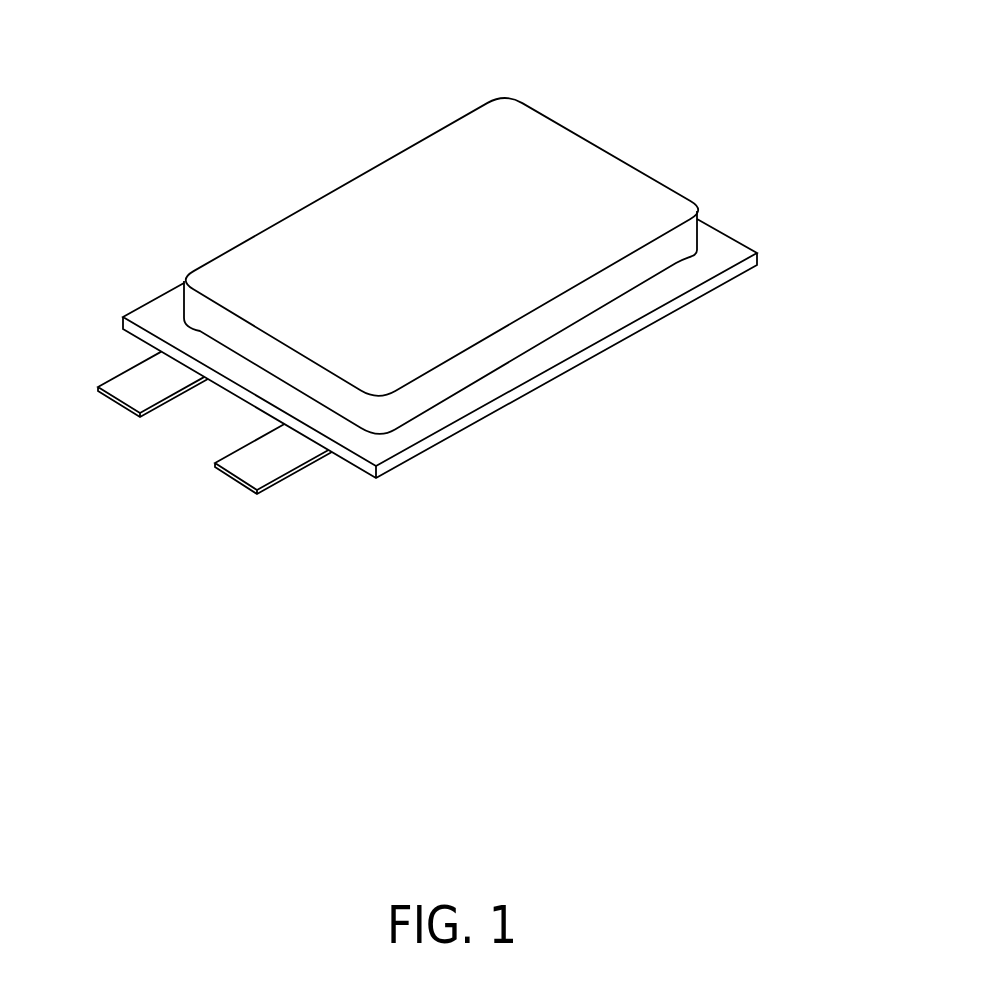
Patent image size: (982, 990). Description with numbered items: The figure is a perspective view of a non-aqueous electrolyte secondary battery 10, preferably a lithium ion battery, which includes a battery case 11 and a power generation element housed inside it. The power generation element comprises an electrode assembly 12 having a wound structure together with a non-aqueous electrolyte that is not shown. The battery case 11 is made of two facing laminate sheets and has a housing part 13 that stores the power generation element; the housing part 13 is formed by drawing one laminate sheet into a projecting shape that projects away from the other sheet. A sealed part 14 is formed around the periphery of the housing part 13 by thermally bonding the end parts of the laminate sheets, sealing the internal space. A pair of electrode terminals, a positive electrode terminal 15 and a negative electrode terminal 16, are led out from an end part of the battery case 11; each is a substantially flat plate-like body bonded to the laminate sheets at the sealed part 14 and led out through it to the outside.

The non-aqueous electrolyte secondary battery 10 is at (806, 55).
The battery case 11 is at (704, 219).
The electrode assembly 12 is at (528, 282).
The housing part 13 is at (282, 246).
The sealed part 14 is at (161, 311).
The positive electrode terminal 15 is at (243, 465).
The negative electrode terminal 16 is at (130, 398).